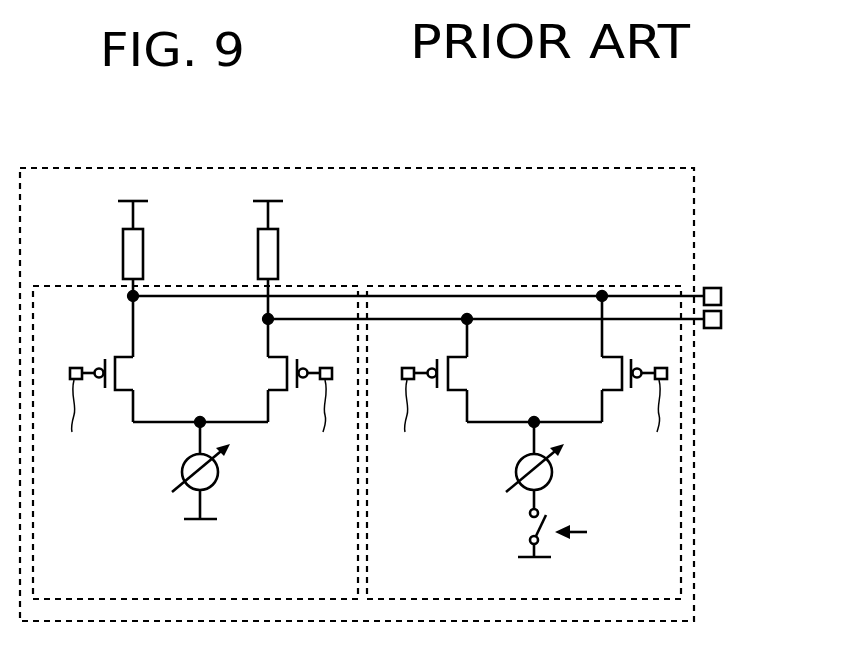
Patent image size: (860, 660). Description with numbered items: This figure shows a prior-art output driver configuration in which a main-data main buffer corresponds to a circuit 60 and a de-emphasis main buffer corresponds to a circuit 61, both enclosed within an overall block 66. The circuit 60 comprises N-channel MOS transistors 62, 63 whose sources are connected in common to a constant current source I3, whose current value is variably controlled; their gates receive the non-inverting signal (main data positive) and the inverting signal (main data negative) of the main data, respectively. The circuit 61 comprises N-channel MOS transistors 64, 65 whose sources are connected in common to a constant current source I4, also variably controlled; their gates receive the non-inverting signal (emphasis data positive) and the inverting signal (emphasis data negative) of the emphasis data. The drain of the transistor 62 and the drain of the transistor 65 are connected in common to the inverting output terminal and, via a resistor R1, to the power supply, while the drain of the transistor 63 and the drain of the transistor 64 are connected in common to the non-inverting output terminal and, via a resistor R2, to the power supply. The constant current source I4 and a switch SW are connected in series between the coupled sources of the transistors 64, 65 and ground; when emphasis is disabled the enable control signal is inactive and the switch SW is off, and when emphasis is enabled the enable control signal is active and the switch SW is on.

The circuit 60 is at (307, 285).
The circuit 61 is at (395, 285).
The N-channel MOS transistor 62 is at (130, 372).
The N-channel MOS transistor 63 is at (268, 372).
The N-channel MOS transistor 64 is at (463, 374).
The N-channel MOS transistor 65 is at (606, 376).
The output driver circuit 66 is at (677, 180).
The resistor R1 is at (144, 233).
The resistor R2 is at (257, 245).
The constant current source I3 is at (192, 487).
The constant current source I4 is at (530, 475).
The switch SW is at (573, 550).